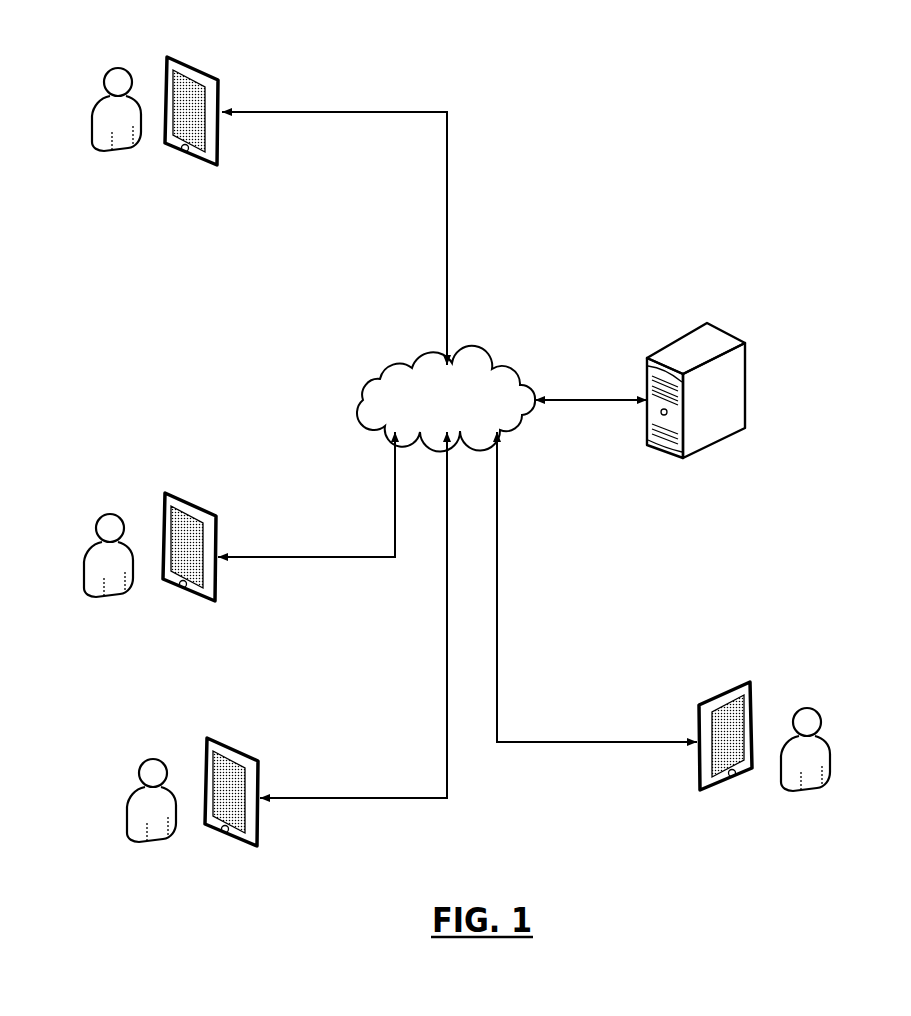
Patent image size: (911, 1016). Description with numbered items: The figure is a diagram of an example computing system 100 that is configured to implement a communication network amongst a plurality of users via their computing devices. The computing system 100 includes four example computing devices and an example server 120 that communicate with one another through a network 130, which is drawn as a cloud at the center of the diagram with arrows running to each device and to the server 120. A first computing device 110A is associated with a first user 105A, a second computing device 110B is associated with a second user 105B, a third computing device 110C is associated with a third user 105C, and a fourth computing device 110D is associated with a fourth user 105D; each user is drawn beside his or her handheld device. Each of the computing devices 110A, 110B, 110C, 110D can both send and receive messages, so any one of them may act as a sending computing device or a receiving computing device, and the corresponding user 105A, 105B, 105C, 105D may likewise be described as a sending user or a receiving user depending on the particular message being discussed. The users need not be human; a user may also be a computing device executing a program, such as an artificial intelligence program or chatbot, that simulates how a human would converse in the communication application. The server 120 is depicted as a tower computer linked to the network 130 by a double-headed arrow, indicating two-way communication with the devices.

The computing system 100 is at (708, 180).
The first user 105A is at (118, 67).
The second user 105B is at (110, 514).
The third user 105C is at (153, 759).
The fourth user 105D is at (809, 708).
The first computing device 110A is at (200, 62).
The second computing device 110B is at (194, 502).
The third computing device 110C is at (237, 746).
The fourth computing device 110D is at (727, 684).
The server 120 is at (746, 390).
The network 130 is at (504, 370).